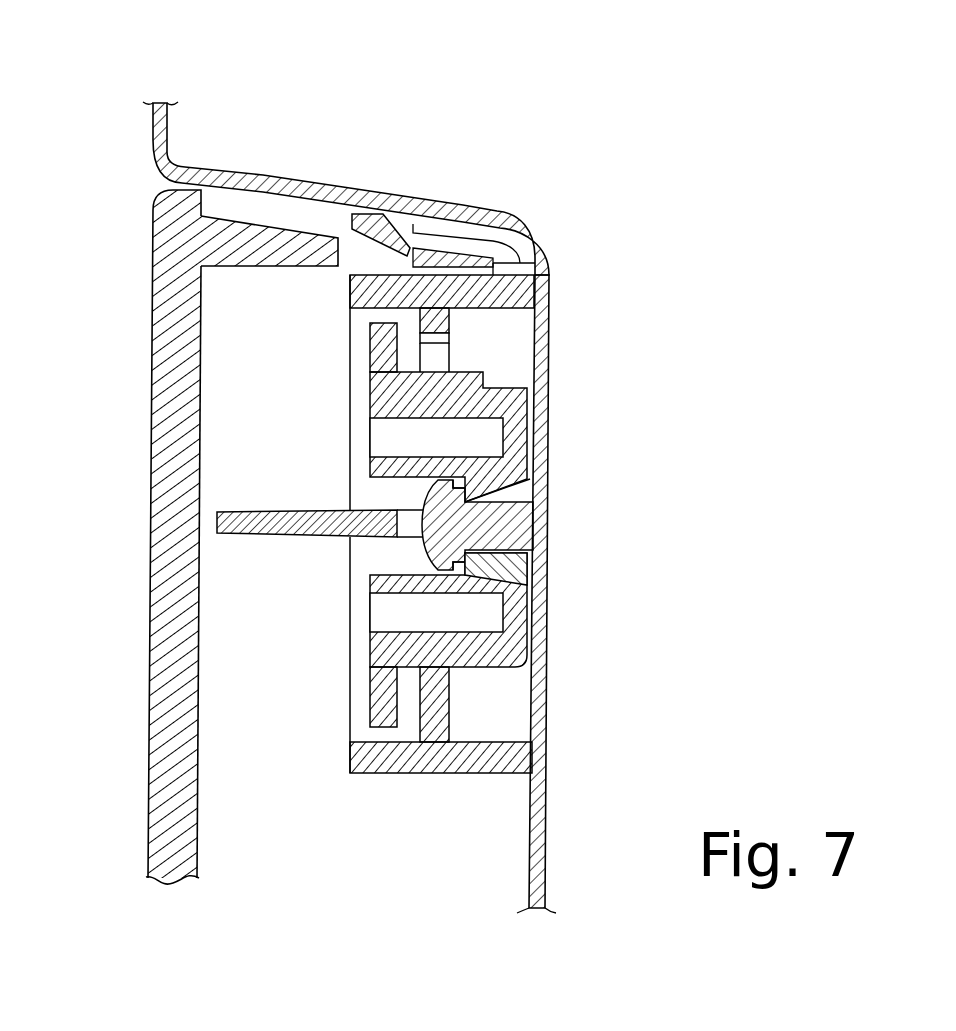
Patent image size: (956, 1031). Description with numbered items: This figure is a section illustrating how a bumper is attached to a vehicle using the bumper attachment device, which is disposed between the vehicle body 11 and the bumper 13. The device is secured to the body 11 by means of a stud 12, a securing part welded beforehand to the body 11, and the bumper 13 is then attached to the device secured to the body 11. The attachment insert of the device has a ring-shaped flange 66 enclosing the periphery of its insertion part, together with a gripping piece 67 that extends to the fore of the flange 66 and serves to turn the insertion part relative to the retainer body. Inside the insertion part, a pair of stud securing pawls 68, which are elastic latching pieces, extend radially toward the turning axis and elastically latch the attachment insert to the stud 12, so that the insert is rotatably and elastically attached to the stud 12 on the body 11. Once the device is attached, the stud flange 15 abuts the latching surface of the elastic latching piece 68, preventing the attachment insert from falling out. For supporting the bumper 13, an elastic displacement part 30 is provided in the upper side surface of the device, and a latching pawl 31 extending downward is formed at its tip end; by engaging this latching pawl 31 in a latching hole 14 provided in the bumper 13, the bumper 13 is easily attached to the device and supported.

The vehicle body 11 is at (272, 176).
The stud 12 is at (507, 530).
The bumper 13 is at (148, 665).
The latching hole 14 is at (346, 243).
The stud flange 15 is at (477, 551).
The elastic displacement part 30 is at (547, 229).
The latching pawl 31 is at (395, 225).
The flange 66 is at (365, 700).
The gripping piece 67 is at (276, 508).
The stud securing pawl 68 is at (546, 481).